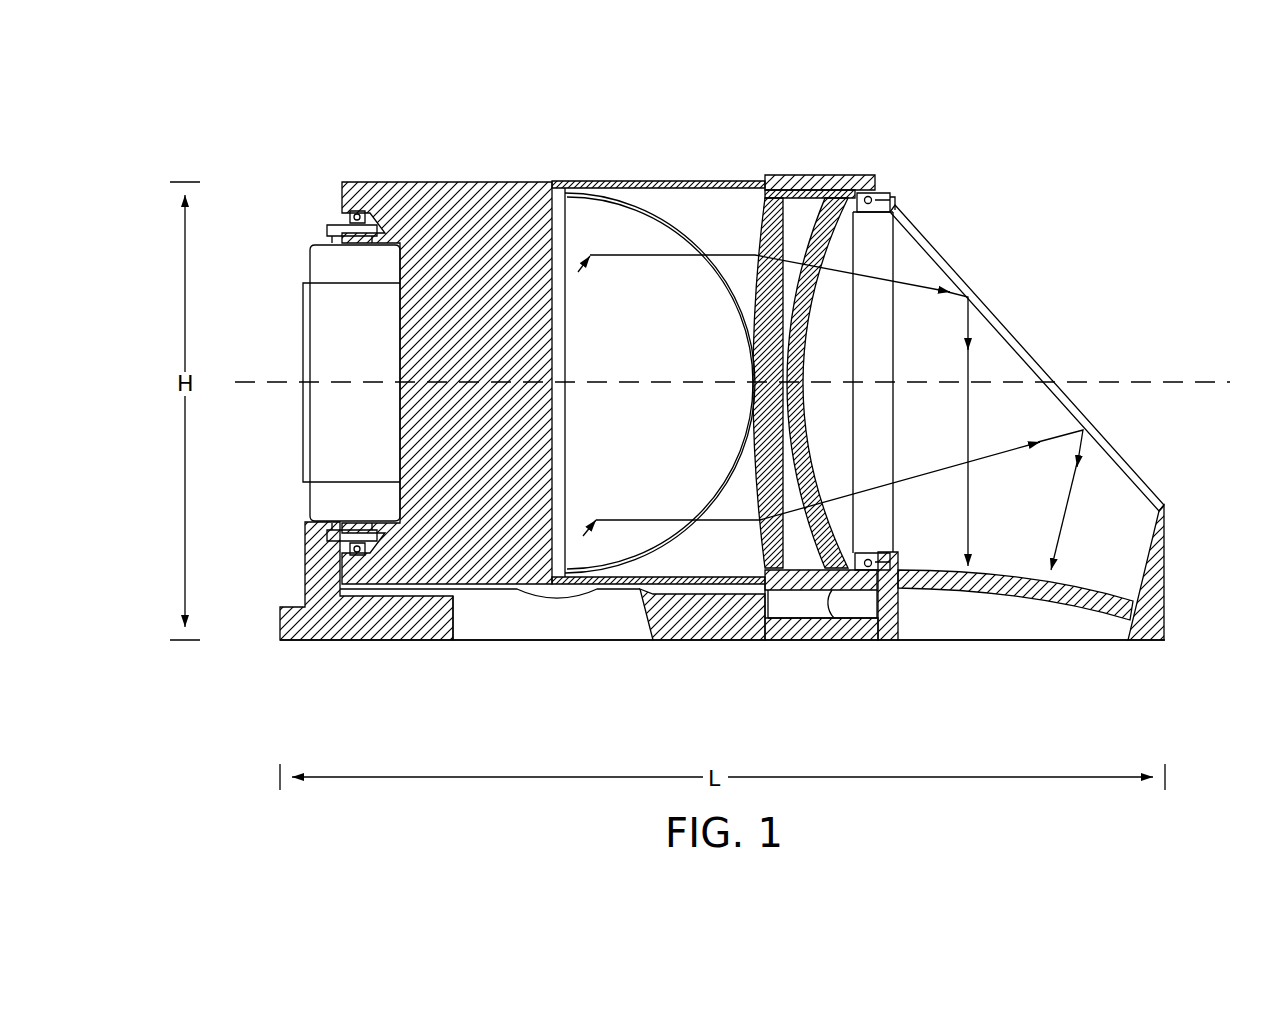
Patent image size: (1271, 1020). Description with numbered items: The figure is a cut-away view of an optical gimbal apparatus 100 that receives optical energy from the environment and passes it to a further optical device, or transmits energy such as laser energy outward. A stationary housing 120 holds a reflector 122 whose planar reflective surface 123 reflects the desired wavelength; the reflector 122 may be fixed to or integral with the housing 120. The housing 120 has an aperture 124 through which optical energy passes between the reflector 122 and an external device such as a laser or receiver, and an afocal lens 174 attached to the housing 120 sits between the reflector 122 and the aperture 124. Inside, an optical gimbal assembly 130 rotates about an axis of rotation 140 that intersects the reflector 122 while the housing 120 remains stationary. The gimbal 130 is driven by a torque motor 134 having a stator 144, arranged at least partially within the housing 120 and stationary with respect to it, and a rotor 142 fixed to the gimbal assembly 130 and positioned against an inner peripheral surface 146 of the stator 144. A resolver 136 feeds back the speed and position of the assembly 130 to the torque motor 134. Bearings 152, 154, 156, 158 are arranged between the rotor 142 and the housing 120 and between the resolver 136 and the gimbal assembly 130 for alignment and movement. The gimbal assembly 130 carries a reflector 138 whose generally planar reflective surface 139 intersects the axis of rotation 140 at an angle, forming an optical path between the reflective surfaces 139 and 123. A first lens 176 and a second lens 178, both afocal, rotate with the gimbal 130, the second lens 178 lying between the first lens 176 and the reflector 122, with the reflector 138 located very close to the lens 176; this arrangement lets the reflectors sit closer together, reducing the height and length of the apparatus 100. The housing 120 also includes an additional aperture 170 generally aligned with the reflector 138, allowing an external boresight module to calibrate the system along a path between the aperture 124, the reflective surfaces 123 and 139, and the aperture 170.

The optical gimbal apparatus 100 is at (268, 135).
The housing 120 is at (355, 641).
The reflector 122 is at (1003, 318).
The planar reflective surface 123 is at (1132, 485).
The aperture 124 is at (1005, 641).
The optical gimbal assembly 130 is at (443, 183).
The torque motor 134 is at (827, 444).
The resolver 136 is at (322, 268).
The reflector 138 is at (629, 367).
The planar reflective surface 139 is at (655, 326).
The axis of rotation 140 is at (247, 386).
The rotor 142 is at (818, 175).
The stator 144 is at (792, 608).
The inner peripheral surface 146 is at (830, 617).
The bearing 152 is at (880, 198).
The bearing 154 is at (882, 557).
The bearing 156 is at (345, 216).
The bearing 158 is at (345, 551).
The additional aperture 170 is at (553, 641).
The afocal lens 174 is at (1100, 621).
The first lens 176 is at (770, 221).
The second lens 178 is at (805, 304).